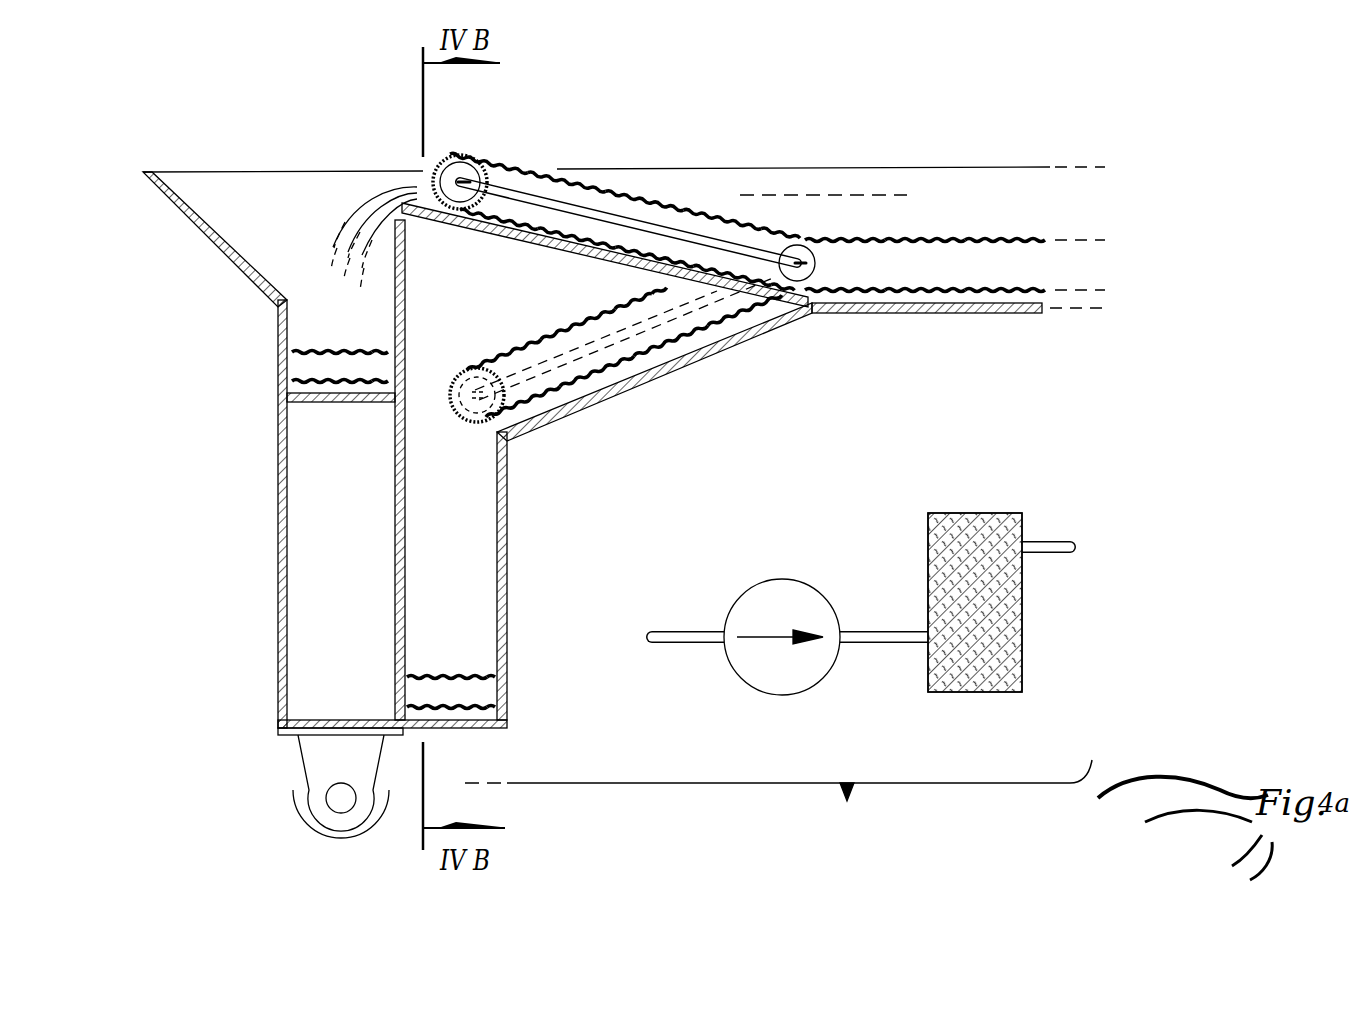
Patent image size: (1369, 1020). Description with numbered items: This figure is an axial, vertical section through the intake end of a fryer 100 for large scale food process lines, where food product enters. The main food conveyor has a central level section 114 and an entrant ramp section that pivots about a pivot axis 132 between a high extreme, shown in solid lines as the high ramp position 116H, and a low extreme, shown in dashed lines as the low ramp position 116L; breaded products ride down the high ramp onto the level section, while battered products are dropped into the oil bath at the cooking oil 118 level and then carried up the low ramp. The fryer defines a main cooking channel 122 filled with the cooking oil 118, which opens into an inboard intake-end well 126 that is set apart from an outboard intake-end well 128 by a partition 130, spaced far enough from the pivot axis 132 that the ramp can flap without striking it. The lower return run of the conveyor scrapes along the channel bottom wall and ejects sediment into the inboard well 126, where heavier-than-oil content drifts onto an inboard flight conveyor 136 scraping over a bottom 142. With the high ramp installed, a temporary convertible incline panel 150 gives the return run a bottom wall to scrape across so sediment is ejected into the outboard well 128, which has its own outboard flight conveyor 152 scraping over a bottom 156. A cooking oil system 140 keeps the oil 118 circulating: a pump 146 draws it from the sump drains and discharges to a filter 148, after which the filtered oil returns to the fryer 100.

The fryer 100 is at (190, 108).
The cooking oil 118 is at (360, 190).
The high ramp position 116H is at (487, 160).
The low ramp position 116L is at (477, 366).
The pivot axis 132 is at (797, 262).
The convertible incline panel 150 is at (513, 238).
The central level section 114 is at (1007, 237).
The main cooking channel 122 is at (1038, 197).
The outboard intake-end well 128 is at (332, 315).
The outboard flight conveyor 152 is at (305, 352).
The bottom of outboard sediment well 156 is at (325, 396).
The partition 130 is at (406, 512).
The inboard intake-end well 126 is at (507, 548).
The inboard flight conveyor 136 is at (462, 673).
The bottom of inboard well 142 is at (460, 707).
The pump 146 is at (753, 592).
The filter 148 is at (945, 538).
The cooking oil system 140 is at (778, 800).